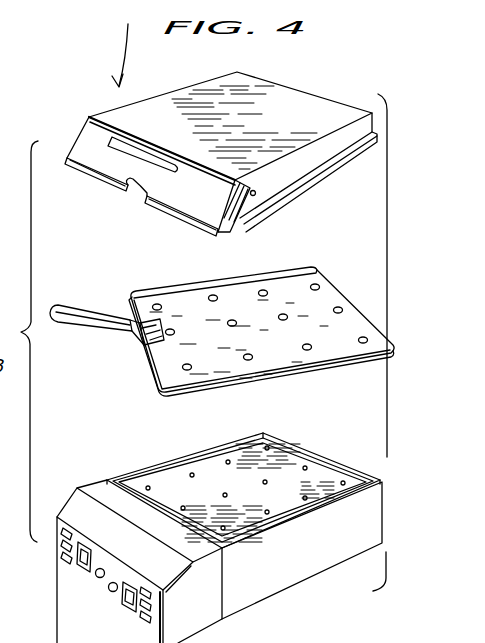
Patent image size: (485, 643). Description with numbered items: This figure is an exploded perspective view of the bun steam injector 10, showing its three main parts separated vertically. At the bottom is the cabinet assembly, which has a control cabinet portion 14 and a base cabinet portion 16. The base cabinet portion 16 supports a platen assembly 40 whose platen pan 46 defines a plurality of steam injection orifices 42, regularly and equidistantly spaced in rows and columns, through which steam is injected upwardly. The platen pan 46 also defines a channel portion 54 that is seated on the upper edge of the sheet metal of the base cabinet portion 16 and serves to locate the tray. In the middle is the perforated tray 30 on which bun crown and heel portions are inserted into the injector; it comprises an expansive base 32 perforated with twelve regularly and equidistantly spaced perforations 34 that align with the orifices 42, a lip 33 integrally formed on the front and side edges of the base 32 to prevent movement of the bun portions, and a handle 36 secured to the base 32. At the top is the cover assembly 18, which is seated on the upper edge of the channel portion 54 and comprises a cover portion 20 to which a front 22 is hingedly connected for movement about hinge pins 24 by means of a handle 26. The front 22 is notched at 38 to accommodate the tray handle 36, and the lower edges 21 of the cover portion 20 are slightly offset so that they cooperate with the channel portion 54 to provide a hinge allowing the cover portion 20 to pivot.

The bun steam injector 10 is at (5, 33).
The control cabinet portion 14 is at (202, 612).
The base cabinet portion 16 is at (324, 556).
The cover assembly 18 is at (347, 88).
The cover portion 20 is at (308, 172).
The lower edges of cover portion 21 is at (314, 178).
The front 22 is at (185, 192).
The hinge pins 24 is at (253, 197).
The handle 26 is at (133, 150).
The perforated tray 30 is at (222, 338).
The base 32 is at (268, 336).
The lip 33 is at (233, 289).
The perforations 34 is at (175, 335).
The handle 36 is at (96, 316).
The notch 38 is at (124, 184).
The platen assembly 40 is at (240, 491).
The steam injection orifices 42 is at (172, 472).
The platen pan 46 is at (260, 511).
The channel portion 54 is at (322, 458).